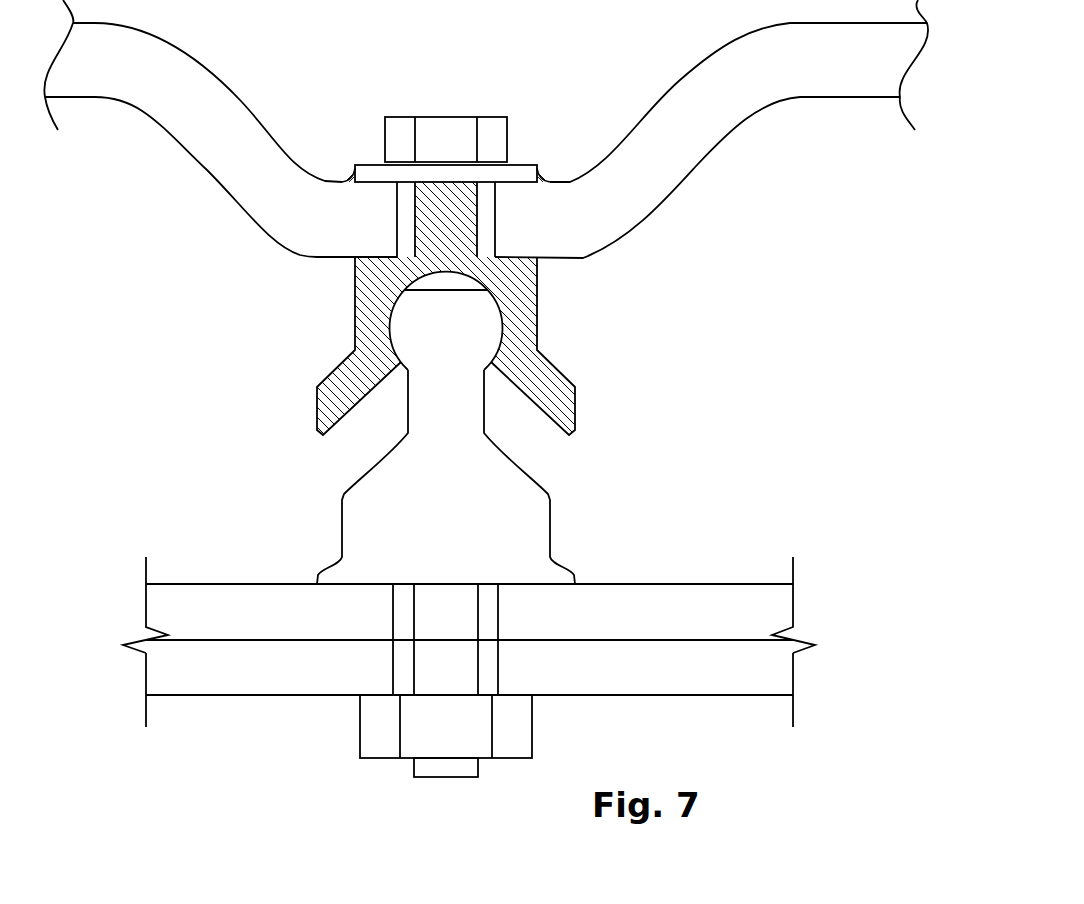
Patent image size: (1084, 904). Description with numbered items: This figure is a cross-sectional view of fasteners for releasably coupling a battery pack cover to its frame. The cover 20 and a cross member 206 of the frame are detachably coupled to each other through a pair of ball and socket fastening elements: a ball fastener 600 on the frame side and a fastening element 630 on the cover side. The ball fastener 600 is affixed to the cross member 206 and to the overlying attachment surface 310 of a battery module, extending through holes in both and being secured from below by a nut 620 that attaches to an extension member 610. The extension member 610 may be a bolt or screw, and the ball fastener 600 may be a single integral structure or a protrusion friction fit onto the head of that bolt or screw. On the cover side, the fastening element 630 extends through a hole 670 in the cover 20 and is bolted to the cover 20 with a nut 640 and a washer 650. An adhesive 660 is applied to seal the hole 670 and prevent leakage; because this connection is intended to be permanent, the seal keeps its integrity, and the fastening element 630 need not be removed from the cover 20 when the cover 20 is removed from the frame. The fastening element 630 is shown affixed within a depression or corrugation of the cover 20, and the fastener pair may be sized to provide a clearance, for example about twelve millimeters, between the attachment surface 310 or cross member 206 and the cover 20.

The cover 20 is at (847, 75).
The ball fastener 600 is at (471, 333).
The extension member 610 is at (471, 656).
The nut 620 is at (380, 760).
The fastening element 630 is at (553, 380).
The nut 640 is at (385, 129).
The washer 650 is at (368, 165).
The adhesive 660 is at (541, 181).
The hole 670 is at (396, 232).
The attachment surface 310 is at (690, 630).
The cross member 206 is at (690, 683).